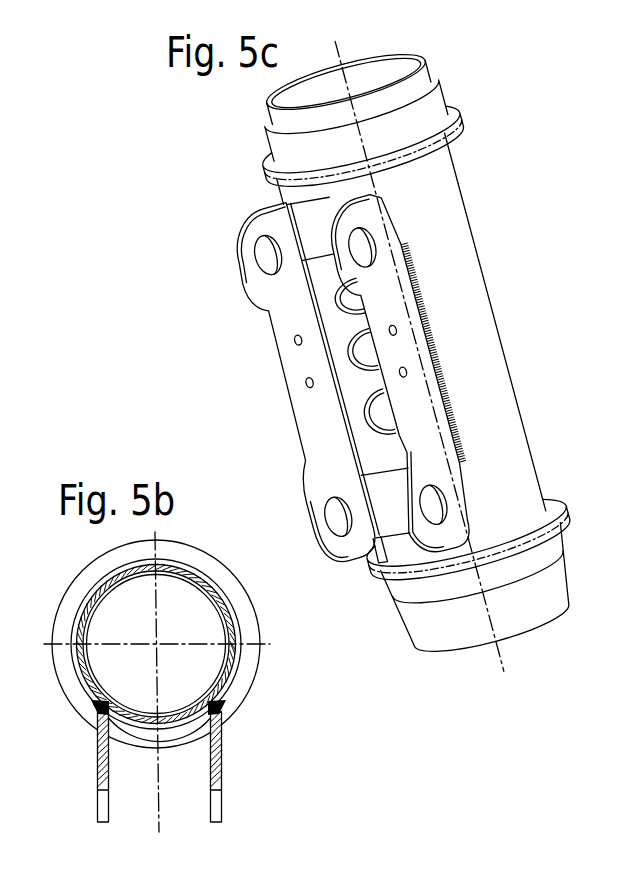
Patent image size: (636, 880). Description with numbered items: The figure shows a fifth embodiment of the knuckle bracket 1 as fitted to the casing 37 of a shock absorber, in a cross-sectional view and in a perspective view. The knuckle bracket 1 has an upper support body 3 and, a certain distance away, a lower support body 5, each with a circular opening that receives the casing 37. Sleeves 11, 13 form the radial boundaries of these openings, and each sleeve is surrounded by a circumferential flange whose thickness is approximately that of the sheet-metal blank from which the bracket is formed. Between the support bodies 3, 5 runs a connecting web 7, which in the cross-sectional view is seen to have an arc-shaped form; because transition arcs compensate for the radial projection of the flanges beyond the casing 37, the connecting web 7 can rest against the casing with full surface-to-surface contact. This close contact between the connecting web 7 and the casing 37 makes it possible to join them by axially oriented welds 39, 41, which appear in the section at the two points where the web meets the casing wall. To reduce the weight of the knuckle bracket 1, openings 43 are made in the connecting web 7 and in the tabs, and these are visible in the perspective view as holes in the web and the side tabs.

In FIG. 5c, the knuckle bracket 1 is at (224, 407).
In FIG. 5c, the upper support body 3 is at (477, 119).
In FIG. 5c, the lower support body 5 is at (582, 511).
In FIG. 5c, the connecting web 7 is at (317, 360).
In FIG. 5b, the connecting web 7 is at (140, 738).
In FIG. 5c, the sleeve 11 is at (437, 108).
In FIG. 5c, the sleeve 13 is at (560, 535).
In FIG. 5c, the casing 37 is at (514, 351).
In FIG. 5b, the weld 39 is at (97, 704).
In FIG. 5c, the weld 41 is at (433, 281).
In FIG. 5b, the weld 41 is at (219, 704).
In FIG. 5c, the openings 43 is at (340, 297).